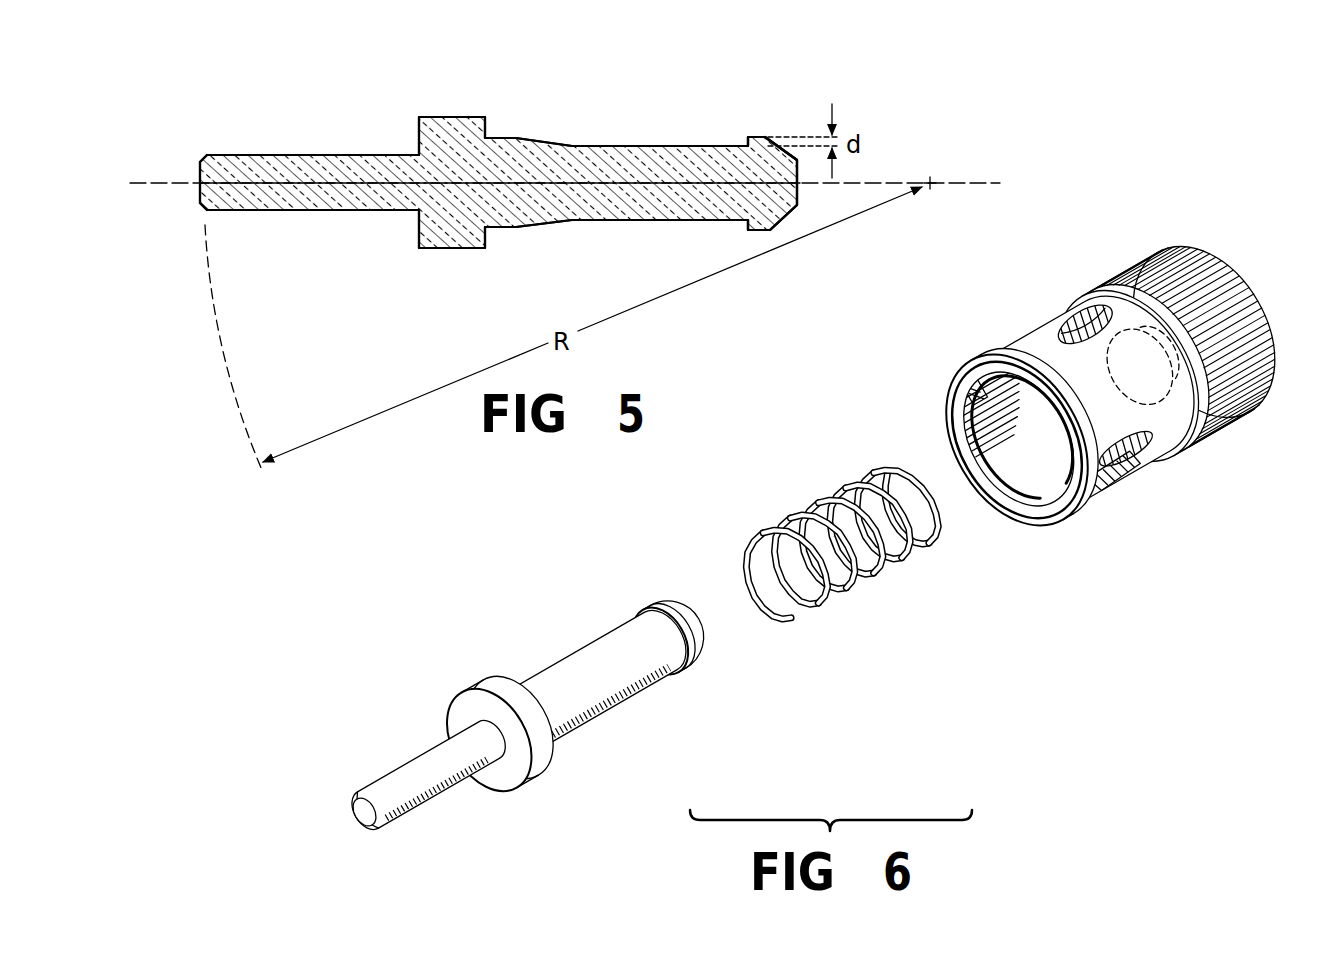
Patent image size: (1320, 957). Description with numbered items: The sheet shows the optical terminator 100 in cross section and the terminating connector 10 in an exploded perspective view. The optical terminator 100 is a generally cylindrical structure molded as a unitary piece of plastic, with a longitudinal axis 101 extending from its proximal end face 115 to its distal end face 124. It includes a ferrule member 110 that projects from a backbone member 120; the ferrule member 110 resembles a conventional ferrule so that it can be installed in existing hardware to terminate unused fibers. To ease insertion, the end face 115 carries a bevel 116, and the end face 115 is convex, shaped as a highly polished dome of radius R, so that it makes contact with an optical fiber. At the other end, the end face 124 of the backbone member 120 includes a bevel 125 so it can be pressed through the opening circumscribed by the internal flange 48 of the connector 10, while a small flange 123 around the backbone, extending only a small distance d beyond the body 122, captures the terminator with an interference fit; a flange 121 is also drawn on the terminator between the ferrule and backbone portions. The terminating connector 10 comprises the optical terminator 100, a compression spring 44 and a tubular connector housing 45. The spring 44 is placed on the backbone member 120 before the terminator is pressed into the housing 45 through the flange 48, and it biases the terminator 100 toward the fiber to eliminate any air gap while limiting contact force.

In FIG. 6, the terminating connector 10 is at (804, 542).
In FIG. 6, the compression spring 44 is at (807, 507).
In FIG. 6, the tubular connector housing 45 is at (1021, 340).
In FIG. 6, the internal flange 48 is at (1118, 398).
In FIG. 5, the optical terminator 100 is at (270, 90).
In FIG. 6, the optical terminator 100 is at (515, 698).
In FIG. 5, the longitudinal axis 101 is at (170, 186).
In FIG. 5, the ferrule member 110 is at (281, 153).
In FIG. 5, the proximal end face 115 is at (199, 183).
In FIG. 5, the bevel 116 is at (201, 158).
In FIG. 5, the backbone member 120 is at (797, 83).
In FIG. 6, the backbone member 120 is at (601, 640).
In FIG. 5, the flange 121 is at (455, 249).
In FIG. 5, the body of the backbone 122 is at (668, 146).
In FIG. 5, the small flange 123 is at (757, 137).
In FIG. 5, the distal end face 124 is at (799, 203).
In FIG. 5, the bevel 125 is at (784, 218).